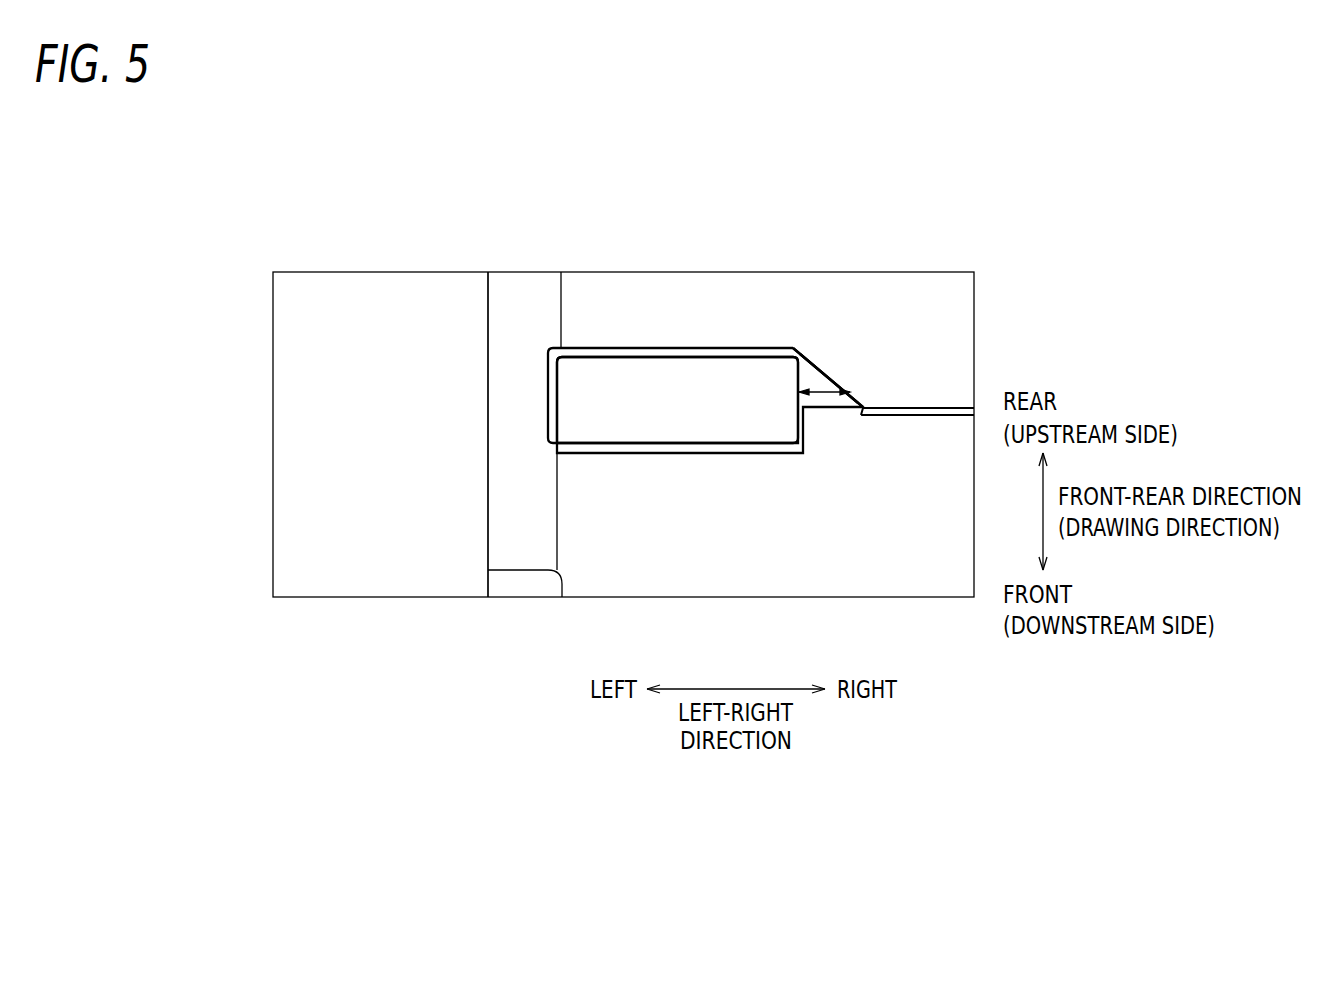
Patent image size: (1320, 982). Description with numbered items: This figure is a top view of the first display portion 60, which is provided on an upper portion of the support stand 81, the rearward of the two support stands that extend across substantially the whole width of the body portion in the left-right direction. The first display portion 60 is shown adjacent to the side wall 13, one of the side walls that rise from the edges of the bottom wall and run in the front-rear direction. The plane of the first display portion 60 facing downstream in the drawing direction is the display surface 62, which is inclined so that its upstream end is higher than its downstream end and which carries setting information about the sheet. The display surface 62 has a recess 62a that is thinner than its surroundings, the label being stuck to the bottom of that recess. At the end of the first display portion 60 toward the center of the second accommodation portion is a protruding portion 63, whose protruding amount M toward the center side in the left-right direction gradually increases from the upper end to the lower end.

The side wall 13 is at (498, 493).
The first display portion 60 is at (625, 347).
The display surface 62 is at (679, 422).
The recess 62a is at (798, 383).
The protruding portion 63 is at (818, 375).
The protruding amount M is at (826, 386).
The support stand 81 is at (942, 432).